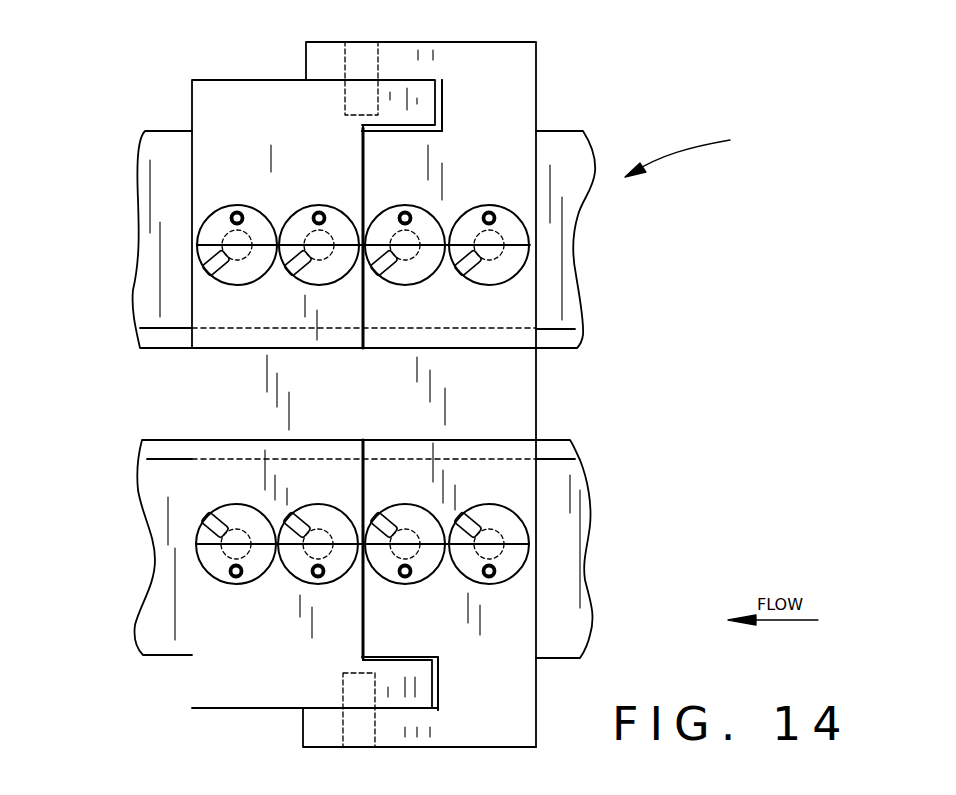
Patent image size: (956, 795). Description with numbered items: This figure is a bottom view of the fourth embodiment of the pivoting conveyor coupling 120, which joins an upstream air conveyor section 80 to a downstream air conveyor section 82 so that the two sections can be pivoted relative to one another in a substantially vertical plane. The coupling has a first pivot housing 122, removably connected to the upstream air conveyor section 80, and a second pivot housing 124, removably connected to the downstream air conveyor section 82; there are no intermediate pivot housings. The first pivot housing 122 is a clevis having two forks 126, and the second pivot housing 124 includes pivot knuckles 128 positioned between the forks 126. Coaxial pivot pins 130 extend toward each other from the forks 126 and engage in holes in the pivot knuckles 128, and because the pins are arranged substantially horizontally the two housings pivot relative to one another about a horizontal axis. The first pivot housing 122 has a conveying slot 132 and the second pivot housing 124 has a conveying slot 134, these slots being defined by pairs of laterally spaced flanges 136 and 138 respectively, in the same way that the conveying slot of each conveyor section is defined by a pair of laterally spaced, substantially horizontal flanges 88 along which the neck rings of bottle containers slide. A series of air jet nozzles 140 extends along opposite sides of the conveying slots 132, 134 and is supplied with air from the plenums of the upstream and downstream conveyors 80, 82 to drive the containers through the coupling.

The upstream air conveyor section 80 is at (558, 131).
The downstream air conveyor section 82 is at (162, 131).
The flanges 88 is at (157, 348).
The pivoting conveyor coupling 120 is at (701, 153).
The first pivot housing 122 is at (487, 112).
The second pivot housing 124 is at (215, 128).
The forks 126 is at (323, 61).
The pivot knuckles 128 is at (413, 107).
The coaxial pivot pins 130 is at (378, 61).
The conveying slot of the first pivot housing 132 is at (508, 350).
The conveying slot of the second pivot housing 134 is at (247, 350).
The flanges of the first pivot housing 136 is at (493, 347).
The flanges of the second pivot housing 138 is at (215, 328).
The air jet nozzles 140 is at (295, 228).